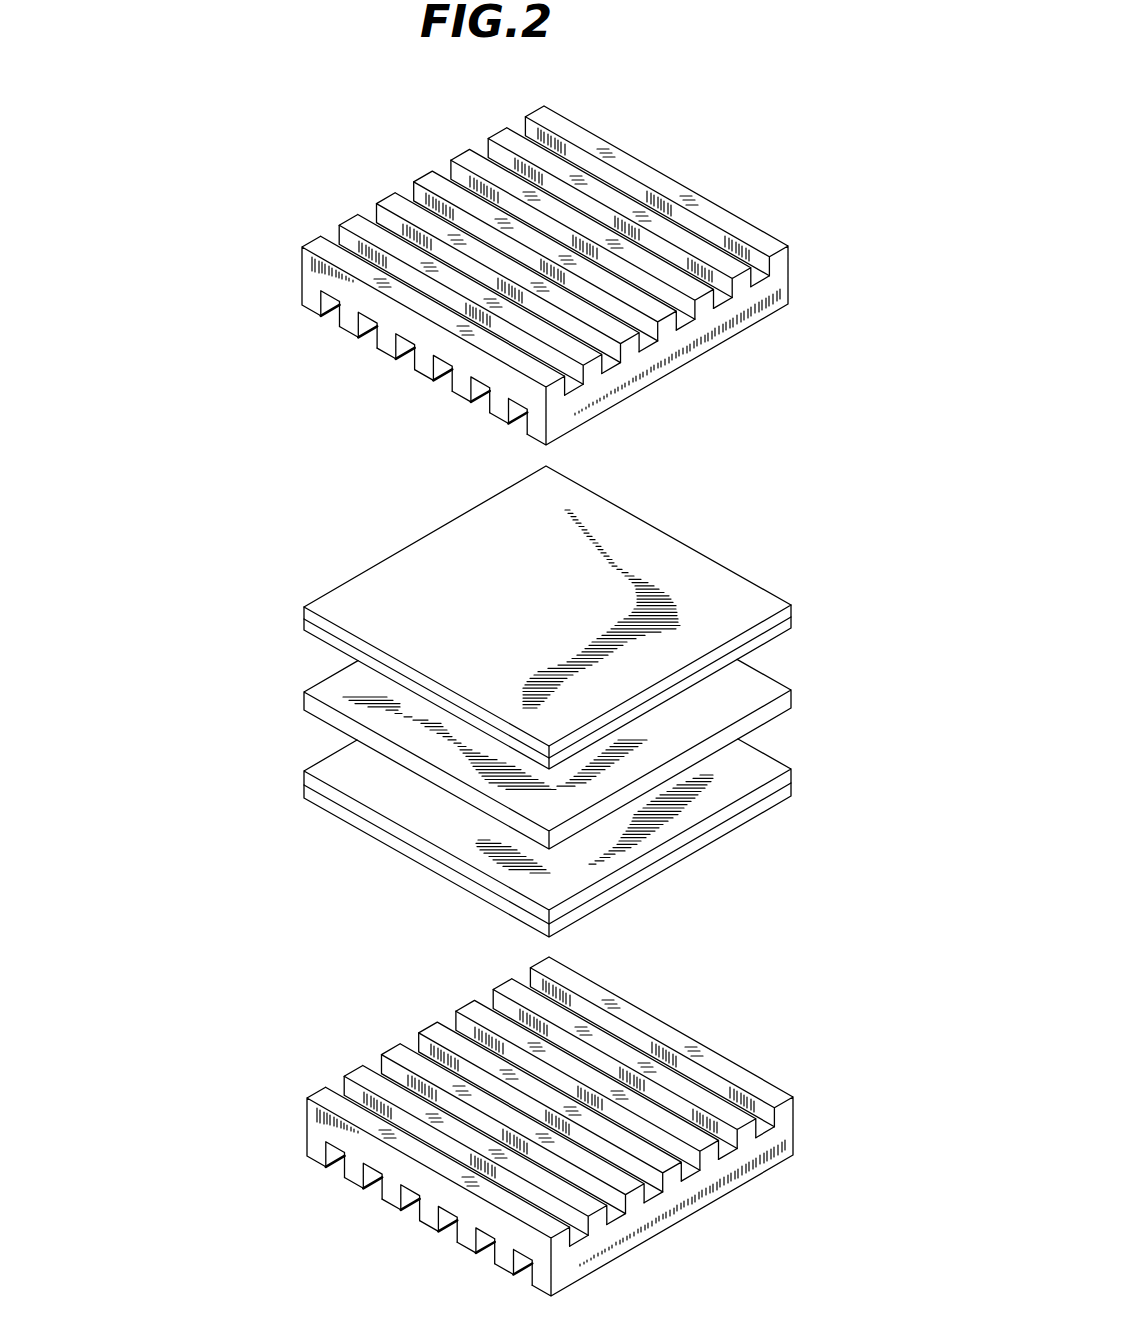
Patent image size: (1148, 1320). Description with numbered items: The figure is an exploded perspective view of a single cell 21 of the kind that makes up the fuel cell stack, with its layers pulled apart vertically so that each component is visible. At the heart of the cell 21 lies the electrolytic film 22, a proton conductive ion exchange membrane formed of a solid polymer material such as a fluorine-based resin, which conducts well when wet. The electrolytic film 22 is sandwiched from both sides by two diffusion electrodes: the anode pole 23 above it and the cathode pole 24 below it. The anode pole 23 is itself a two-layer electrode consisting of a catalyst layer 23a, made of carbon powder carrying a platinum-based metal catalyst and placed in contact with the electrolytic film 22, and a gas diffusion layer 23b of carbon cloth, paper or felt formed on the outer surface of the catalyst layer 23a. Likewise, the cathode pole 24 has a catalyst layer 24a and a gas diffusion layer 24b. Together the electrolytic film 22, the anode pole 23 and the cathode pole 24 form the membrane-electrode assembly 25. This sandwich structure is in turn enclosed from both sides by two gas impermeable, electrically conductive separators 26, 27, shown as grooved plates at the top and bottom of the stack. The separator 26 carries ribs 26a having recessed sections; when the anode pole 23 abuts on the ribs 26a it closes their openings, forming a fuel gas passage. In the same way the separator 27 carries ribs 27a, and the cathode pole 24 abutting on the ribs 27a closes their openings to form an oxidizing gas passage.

The cell 21 is at (153, 229).
The electrolytic film 22 is at (305, 698).
The anode pole 23 is at (217, 583).
The catalyst layer 23a is at (305, 624).
The gas diffusion layer 23b is at (305, 612).
The cathode pole 24 is at (217, 750).
The catalyst layer 24a is at (305, 777).
The gas diffusion layer 24b is at (305, 792).
The membrane-electrode assembly 25 is at (173, 600).
The separator 26 is at (302, 274).
The ribs 26a is at (365, 328).
The separator 27 is at (797, 1142).
The ribs 27a is at (747, 1133).